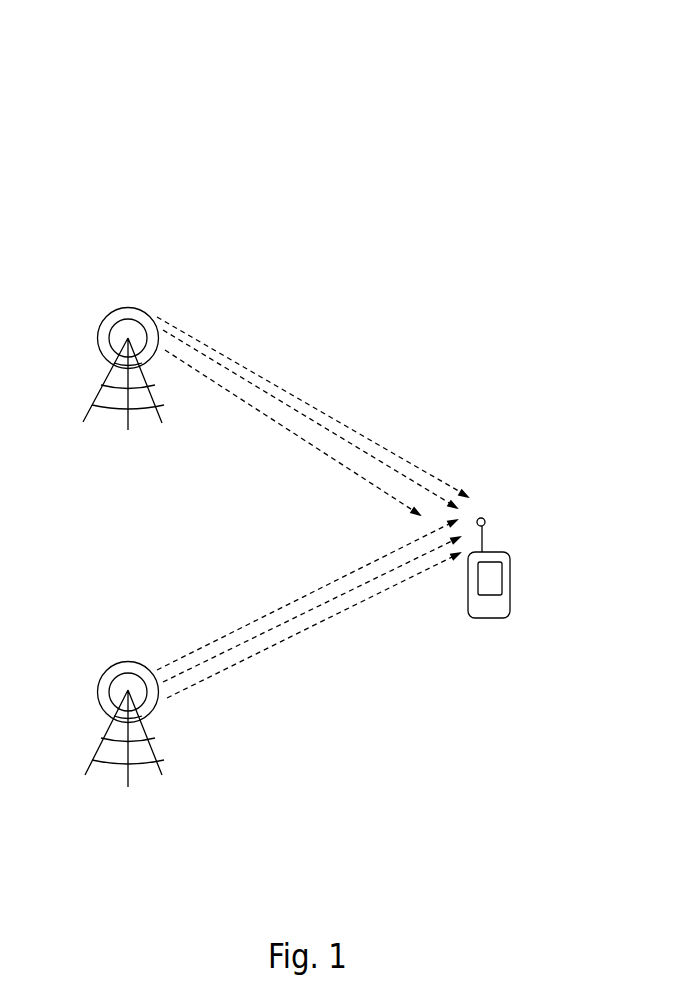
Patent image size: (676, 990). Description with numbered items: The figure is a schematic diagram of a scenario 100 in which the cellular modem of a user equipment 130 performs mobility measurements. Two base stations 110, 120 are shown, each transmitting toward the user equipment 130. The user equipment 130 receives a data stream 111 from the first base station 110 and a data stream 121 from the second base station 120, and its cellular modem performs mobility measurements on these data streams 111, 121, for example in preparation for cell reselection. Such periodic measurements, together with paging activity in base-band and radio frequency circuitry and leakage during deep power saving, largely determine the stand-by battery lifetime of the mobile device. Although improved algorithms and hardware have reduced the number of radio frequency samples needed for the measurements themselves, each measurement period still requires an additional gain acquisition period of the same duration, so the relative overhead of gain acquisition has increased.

The wireless communication system 100 is at (190, 108).
The base station 110 is at (115, 288).
The data stream 111 is at (329, 405).
The base station 120 is at (180, 755).
The data stream 121 is at (357, 626).
The user equipment 130 is at (497, 505).